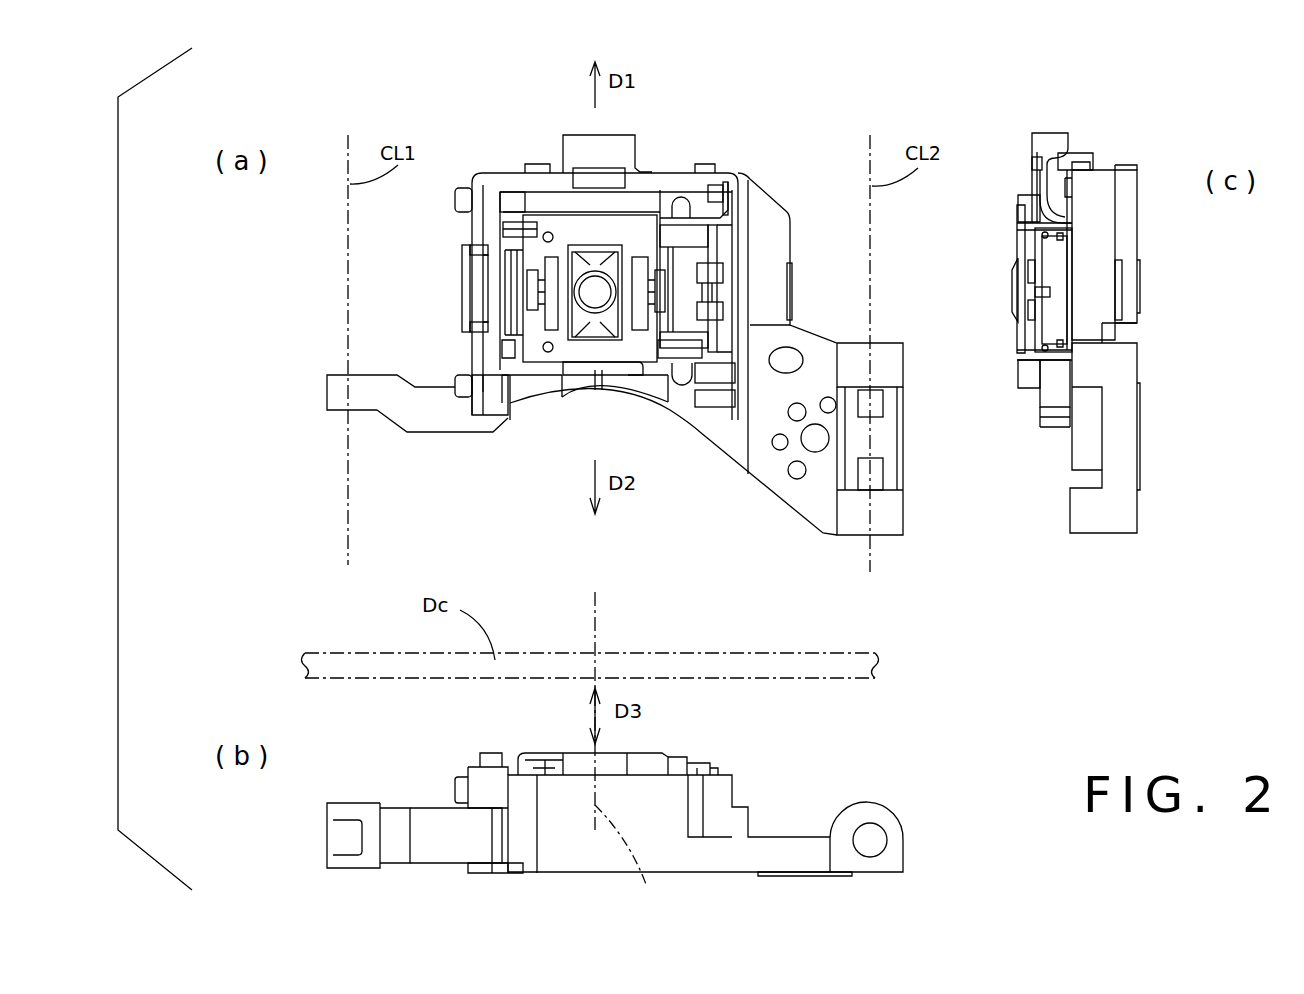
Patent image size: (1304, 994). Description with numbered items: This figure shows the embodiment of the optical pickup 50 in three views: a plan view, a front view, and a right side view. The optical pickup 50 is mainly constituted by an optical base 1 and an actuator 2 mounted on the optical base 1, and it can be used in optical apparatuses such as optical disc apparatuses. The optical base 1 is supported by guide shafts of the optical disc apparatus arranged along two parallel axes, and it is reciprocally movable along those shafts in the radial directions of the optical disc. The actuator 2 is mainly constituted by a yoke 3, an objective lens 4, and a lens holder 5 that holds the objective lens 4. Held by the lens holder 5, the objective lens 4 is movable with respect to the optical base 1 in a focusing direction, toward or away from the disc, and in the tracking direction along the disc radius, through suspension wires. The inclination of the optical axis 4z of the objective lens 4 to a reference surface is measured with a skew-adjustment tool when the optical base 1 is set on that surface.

The optical base 1 is at (772, 197).
The actuator 2 is at (650, 222).
The yoke 3 is at (565, 236).
The objective lens 4 is at (590, 300).
The lens holder 5 is at (540, 298).
The optical axis 4z is at (630, 861).
The optical pickup 50 is at (1018, 78).